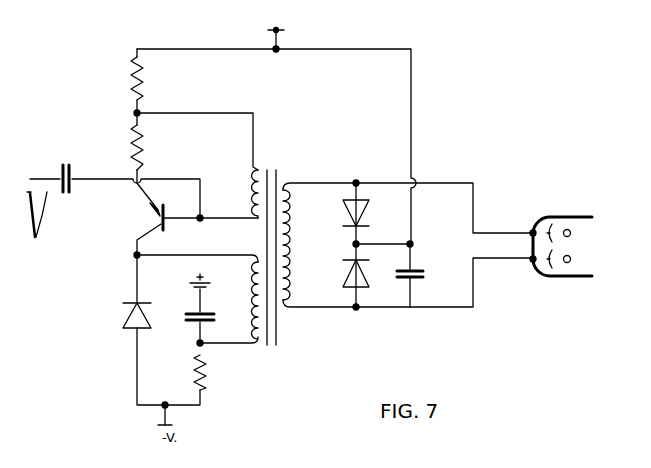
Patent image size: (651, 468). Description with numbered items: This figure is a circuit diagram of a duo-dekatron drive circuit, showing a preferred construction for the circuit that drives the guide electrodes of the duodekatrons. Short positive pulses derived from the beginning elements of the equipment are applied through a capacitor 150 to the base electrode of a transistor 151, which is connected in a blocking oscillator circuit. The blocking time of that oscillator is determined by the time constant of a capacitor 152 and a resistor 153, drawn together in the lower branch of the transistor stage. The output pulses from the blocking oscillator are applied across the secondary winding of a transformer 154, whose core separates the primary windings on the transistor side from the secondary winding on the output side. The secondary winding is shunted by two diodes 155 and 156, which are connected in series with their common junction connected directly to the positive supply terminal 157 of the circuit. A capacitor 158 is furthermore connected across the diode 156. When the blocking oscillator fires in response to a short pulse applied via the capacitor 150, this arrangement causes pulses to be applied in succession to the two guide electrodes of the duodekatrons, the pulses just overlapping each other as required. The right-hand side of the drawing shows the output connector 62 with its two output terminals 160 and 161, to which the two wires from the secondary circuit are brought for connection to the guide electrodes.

The capacitor 150 is at (56, 162).
The transistor 151 is at (167, 203).
The capacitor 152 is at (213, 325).
The resistor 153 is at (205, 372).
The transformer 154 is at (275, 330).
The diode 155 is at (360, 210).
The diode 156 is at (361, 286).
The positive supply terminal 157 is at (279, 41).
The capacitor 158 is at (413, 268).
The output connector 62 is at (537, 221).
The output terminal 160 is at (567, 228).
The output terminal 161 is at (567, 265).